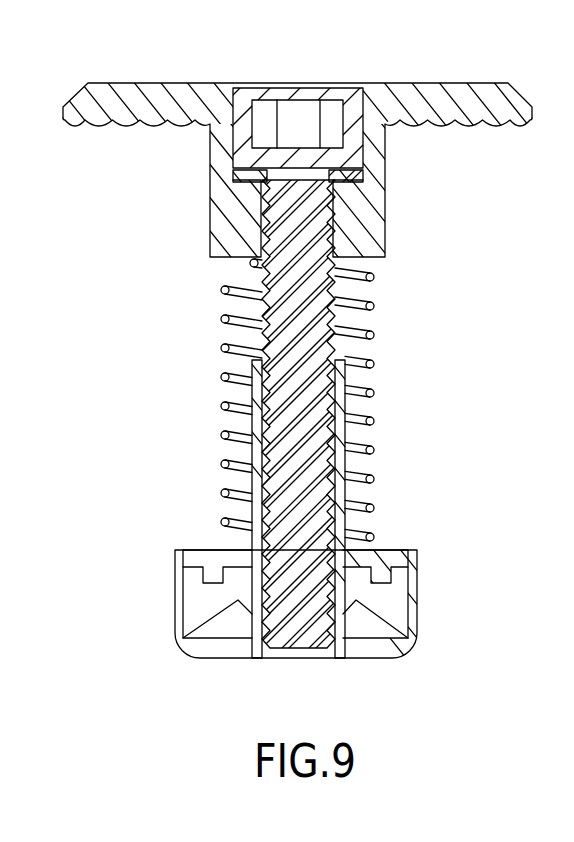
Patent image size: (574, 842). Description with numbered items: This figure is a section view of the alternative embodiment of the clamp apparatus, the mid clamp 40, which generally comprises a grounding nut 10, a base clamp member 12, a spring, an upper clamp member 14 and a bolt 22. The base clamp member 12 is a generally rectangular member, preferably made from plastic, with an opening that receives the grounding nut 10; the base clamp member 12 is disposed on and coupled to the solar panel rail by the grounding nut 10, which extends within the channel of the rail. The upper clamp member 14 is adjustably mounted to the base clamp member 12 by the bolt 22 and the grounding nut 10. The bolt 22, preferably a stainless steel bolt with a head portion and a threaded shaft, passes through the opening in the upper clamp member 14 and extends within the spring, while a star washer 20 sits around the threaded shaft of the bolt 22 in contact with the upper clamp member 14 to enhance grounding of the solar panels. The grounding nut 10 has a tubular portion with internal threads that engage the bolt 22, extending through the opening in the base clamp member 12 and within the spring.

The grounding nut 10 is at (372, 652).
The base clamp member 12 is at (200, 548).
The upper clamp member 14 is at (132, 84).
The star washer 20 is at (245, 182).
The bolt 22 is at (312, 102).
The mid clamp 40 is at (158, 390).